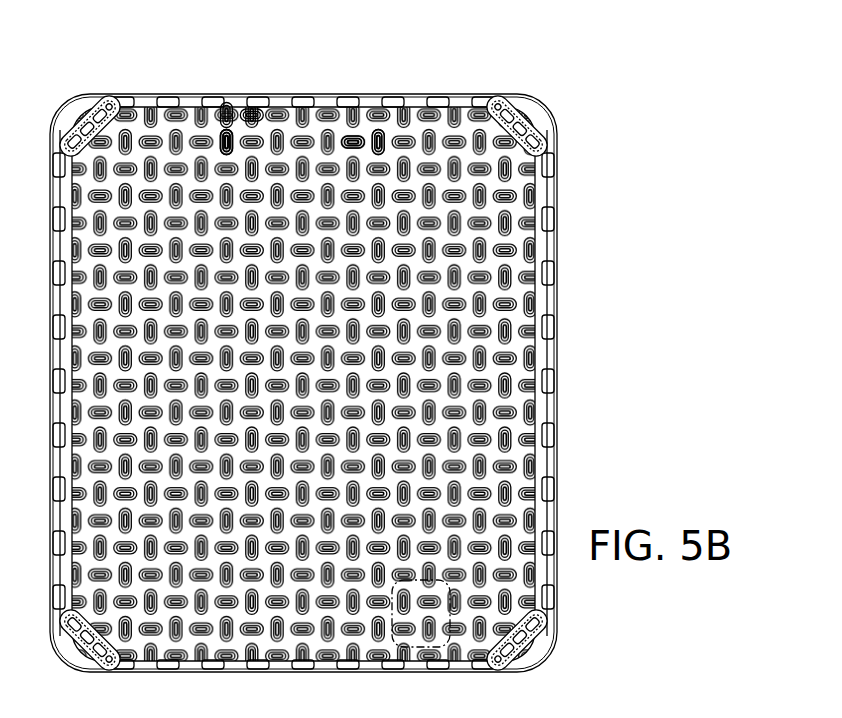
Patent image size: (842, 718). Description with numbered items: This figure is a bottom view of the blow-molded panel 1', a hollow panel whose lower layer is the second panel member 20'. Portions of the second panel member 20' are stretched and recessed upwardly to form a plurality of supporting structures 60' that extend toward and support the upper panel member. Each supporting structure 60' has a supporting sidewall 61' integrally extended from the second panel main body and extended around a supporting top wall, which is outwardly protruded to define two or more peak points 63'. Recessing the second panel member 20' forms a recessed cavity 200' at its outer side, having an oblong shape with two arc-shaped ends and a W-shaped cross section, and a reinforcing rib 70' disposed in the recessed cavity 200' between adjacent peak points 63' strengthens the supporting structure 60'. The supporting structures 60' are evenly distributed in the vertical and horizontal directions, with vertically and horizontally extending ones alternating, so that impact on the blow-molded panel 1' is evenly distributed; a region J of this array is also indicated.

The blow-molded panel 1' is at (303, 349).
The second panel member 20' is at (303, 354).
The supporting structure 60' is at (246, 80).
The supporting sidewall 61' is at (209, 93).
The peak point 63' is at (248, 106).
The recessed cavity 200' is at (263, 114).
The reinforcing rib 70' is at (390, 107).
The region J is at (438, 640).